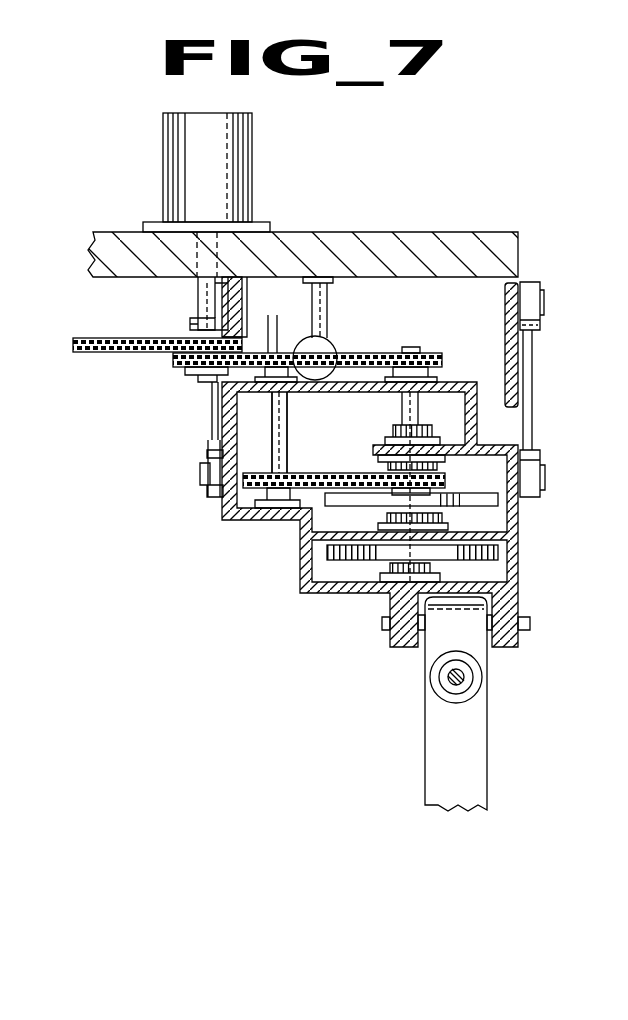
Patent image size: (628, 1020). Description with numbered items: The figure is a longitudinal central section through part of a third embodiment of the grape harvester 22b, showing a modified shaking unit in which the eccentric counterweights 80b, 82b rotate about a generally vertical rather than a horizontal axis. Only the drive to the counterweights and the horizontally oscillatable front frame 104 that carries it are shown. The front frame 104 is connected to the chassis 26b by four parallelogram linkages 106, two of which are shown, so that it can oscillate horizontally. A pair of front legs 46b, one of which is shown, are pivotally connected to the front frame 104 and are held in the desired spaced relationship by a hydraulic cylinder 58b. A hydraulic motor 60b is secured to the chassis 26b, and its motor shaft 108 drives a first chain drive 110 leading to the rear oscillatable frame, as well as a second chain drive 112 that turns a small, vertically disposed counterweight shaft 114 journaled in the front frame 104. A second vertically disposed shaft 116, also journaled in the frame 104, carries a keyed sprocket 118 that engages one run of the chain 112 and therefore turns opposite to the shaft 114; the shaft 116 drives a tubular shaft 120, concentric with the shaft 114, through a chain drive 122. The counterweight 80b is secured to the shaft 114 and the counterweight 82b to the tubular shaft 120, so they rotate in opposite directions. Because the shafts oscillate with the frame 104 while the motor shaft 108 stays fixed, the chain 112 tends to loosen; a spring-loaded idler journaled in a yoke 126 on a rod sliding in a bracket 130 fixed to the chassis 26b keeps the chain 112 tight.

The grape harvester 22b is at (355, 168).
The chassis 26b is at (432, 228).
The hydraulic motor 60b is at (163, 157).
The front frame 104 is at (508, 606).
The parallelogram linkages 106 is at (215, 403).
The motor shaft 108 is at (197, 291).
The first chain drive 110 is at (108, 338).
The second chain drive 112 is at (177, 358).
The counterweight shaft 114 is at (402, 410).
The second vertically disposed shaft 116 is at (273, 423).
The sprocket 118 is at (272, 350).
The tubular shaft 120 is at (384, 468).
The chain drive 122 is at (250, 497).
The yoke 126 is at (335, 343).
The bracket 130 is at (328, 342).
The counterweight 80b is at (315, 560).
The counterweight 82b is at (330, 507).
The front legs 46b is at (425, 742).
The hydraulic cylinder 58b is at (430, 677).